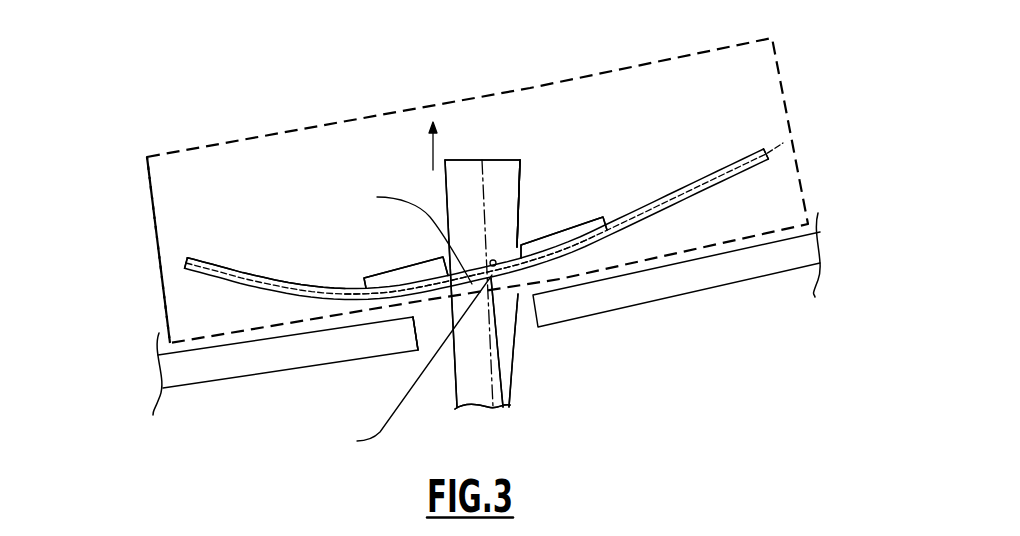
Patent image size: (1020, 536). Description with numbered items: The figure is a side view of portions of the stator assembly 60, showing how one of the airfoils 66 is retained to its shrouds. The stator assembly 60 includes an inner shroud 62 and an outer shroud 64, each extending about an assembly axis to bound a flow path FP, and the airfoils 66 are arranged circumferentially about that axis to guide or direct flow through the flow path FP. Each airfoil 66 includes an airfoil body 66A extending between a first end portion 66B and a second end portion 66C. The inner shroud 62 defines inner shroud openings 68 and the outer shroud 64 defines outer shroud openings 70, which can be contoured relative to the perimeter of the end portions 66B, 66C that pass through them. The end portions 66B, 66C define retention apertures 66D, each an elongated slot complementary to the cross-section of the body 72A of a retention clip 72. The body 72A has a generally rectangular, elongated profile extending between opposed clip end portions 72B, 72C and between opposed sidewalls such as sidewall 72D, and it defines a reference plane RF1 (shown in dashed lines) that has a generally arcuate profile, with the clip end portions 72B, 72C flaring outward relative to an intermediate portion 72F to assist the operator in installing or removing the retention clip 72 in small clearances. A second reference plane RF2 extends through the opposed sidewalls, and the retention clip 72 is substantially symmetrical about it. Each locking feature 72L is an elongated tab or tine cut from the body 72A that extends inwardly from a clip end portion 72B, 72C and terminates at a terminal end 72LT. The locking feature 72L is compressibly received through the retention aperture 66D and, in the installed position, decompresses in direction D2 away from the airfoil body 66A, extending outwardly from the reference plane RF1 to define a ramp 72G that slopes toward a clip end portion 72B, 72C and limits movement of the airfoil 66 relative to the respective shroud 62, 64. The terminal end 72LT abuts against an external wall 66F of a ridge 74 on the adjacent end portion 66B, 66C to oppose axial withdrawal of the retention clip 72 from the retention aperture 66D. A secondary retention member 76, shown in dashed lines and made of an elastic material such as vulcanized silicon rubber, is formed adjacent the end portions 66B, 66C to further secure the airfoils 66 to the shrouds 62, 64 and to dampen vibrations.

The stator assembly 60 is at (113, 147).
The inner shroud 62 is at (209, 393).
The outer shroud 64 is at (676, 270).
The airfoil 66 is at (445, 384).
The airfoil body 66A is at (500, 383).
The first end portion 66B is at (510, 184).
The second end portion 66C is at (518, 203).
The retention aperture 66D is at (496, 261).
The external wall 66F is at (445, 197).
The inner shroud opening 68 is at (423, 348).
The outer shroud opening 70 is at (415, 333).
The retention clip 72 is at (233, 230).
The body 72A is at (268, 260).
The clip end portion 72B is at (188, 272).
The clip end portion 72C is at (752, 176).
The sidewall 72D is at (509, 367).
The intermediate portion 72F is at (518, 294).
The ramp 72G is at (385, 257).
The locking feature 72L is at (390, 280).
The terminal end 72LT is at (430, 263).
The ridge 74 is at (498, 161).
The secondary retention member 76 is at (148, 260).
The direction D2 is at (436, 150).
The reference plane RF1 is at (402, 232).
The reference plane RF2 is at (404, 365).
The flow path FP is at (650, 375).